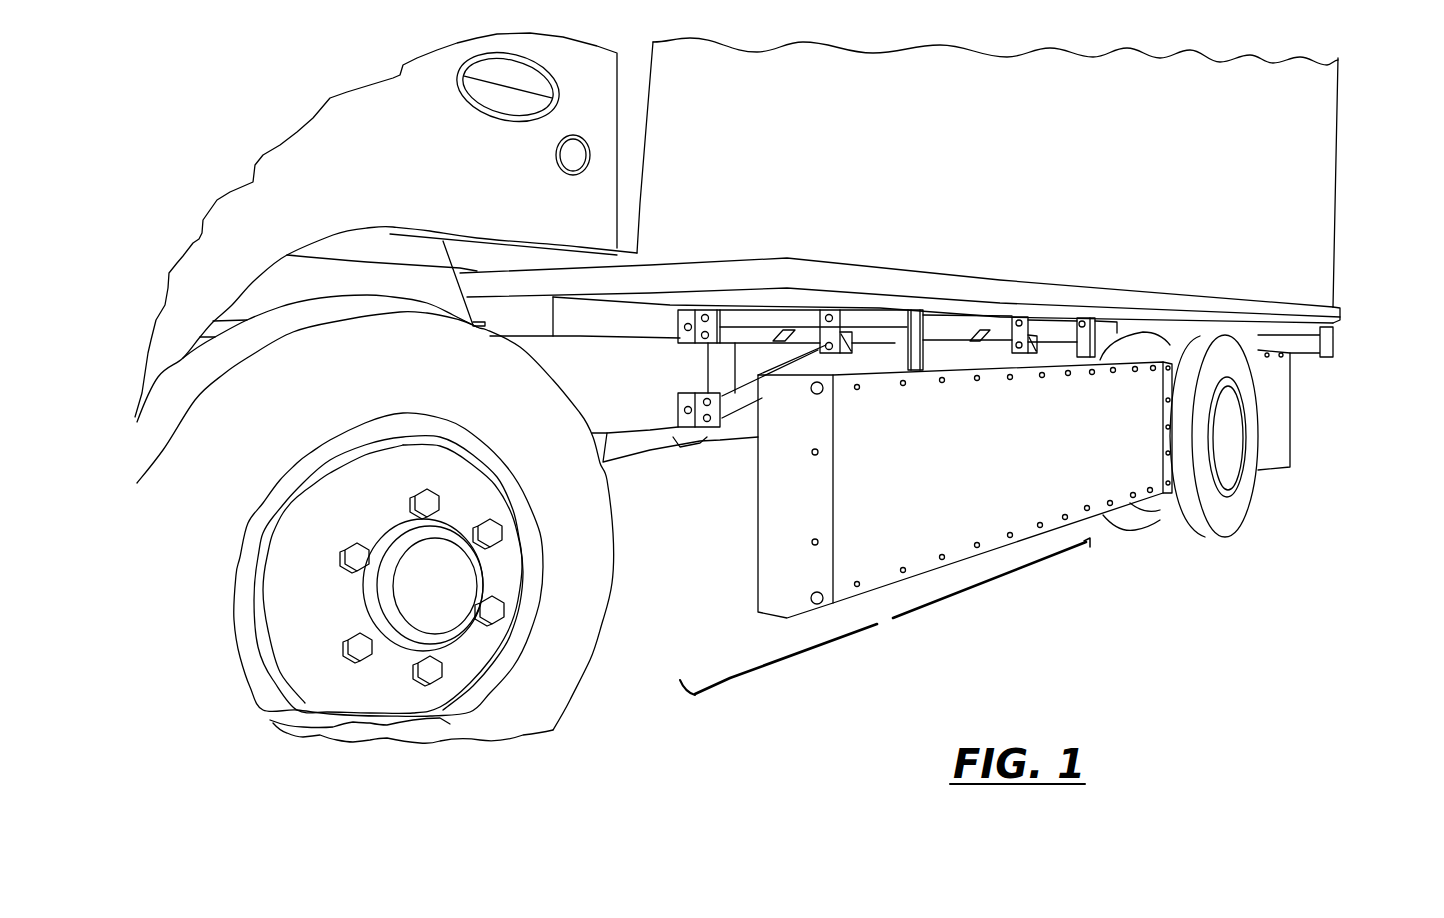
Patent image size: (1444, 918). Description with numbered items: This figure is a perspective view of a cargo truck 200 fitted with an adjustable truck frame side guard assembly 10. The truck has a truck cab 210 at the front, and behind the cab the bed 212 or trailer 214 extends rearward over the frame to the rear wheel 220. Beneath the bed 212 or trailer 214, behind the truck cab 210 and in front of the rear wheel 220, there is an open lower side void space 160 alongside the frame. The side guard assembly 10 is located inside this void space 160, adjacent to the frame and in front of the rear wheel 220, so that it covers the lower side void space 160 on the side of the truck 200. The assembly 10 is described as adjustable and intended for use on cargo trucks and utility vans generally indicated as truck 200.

The cargo truck 200 is at (777, 388).
The truck cab 210 is at (414, 173).
The bed 212 is at (1005, 279).
The trailer 214 is at (1322, 163).
The rear wheel 220 is at (1243, 513).
The adjustable truck frame side guard assembly 10 is at (1069, 484).
The lower side void space 160 is at (880, 630).